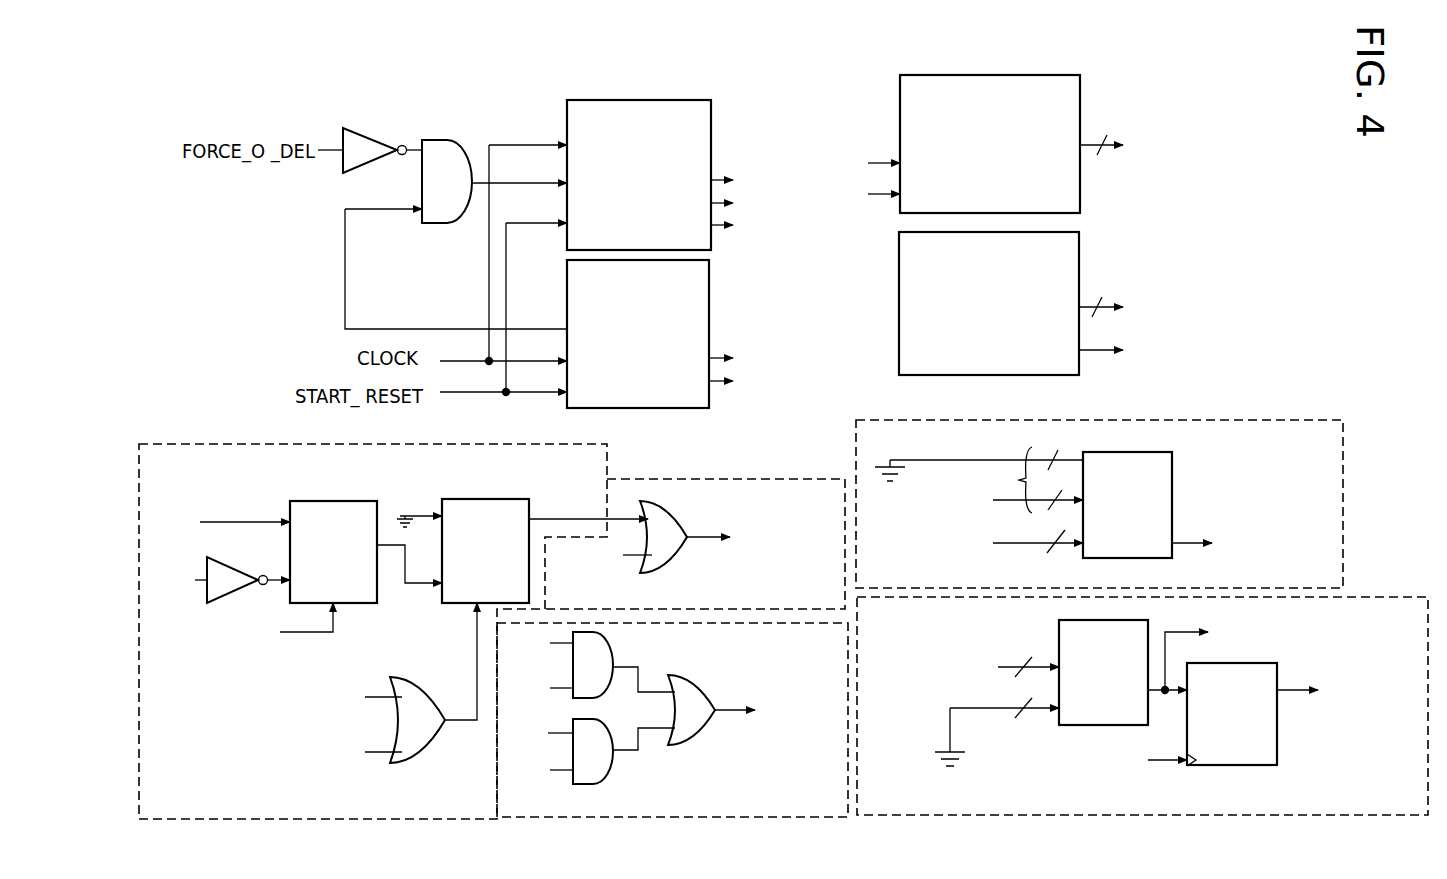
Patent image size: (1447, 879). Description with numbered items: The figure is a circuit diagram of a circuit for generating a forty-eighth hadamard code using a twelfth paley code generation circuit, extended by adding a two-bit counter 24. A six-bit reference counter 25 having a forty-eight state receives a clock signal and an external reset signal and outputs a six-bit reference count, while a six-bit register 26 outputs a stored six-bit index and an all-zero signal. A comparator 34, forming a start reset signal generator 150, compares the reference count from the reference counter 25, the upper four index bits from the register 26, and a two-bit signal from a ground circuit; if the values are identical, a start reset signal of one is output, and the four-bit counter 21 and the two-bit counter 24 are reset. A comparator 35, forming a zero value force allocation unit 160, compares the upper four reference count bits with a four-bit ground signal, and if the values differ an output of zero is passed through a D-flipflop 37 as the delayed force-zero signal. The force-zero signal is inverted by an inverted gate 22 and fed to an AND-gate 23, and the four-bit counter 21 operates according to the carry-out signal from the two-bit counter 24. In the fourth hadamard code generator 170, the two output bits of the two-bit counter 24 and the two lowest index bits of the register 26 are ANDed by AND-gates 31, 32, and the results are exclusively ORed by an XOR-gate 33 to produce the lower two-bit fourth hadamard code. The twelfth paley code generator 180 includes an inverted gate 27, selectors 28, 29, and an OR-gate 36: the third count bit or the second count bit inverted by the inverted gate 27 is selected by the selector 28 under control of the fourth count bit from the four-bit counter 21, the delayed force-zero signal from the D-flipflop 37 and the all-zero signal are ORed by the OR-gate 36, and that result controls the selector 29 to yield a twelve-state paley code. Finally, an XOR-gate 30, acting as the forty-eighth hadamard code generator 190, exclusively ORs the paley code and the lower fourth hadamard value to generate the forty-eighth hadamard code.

The 4-bit counter 21 is at (690, 100).
The inverted gate 22 is at (372, 128).
The AND-gate 23 is at (450, 140).
The 2-bit counter 24 is at (709, 297).
The 6-bit reference counter 25 is at (1057, 75).
The 6-bit register 26 is at (1079, 273).
The inverted gate 27 is at (228, 597).
The selector 28 is at (332, 501).
The selector 29 is at (484, 499).
The XOR-gate 30 is at (676, 562).
The AND-gate 31 is at (611, 645).
The AND-gate 32 is at (613, 762).
The XOR-gate 33 is at (690, 742).
The comparator 34 is at (1172, 472).
The comparator 35 is at (1067, 725).
The OR-gate 36 is at (412, 680).
The D-flipflop 37 is at (1260, 765).
The start reset signal generator 150 is at (1287, 420).
The zero value force allocation unit 160 is at (1370, 597).
The 4th hadamard code generator 170 is at (720, 817).
The 12th paley code generator 180 is at (347, 819).
The 48th hadamard code generator 190 is at (710, 478).